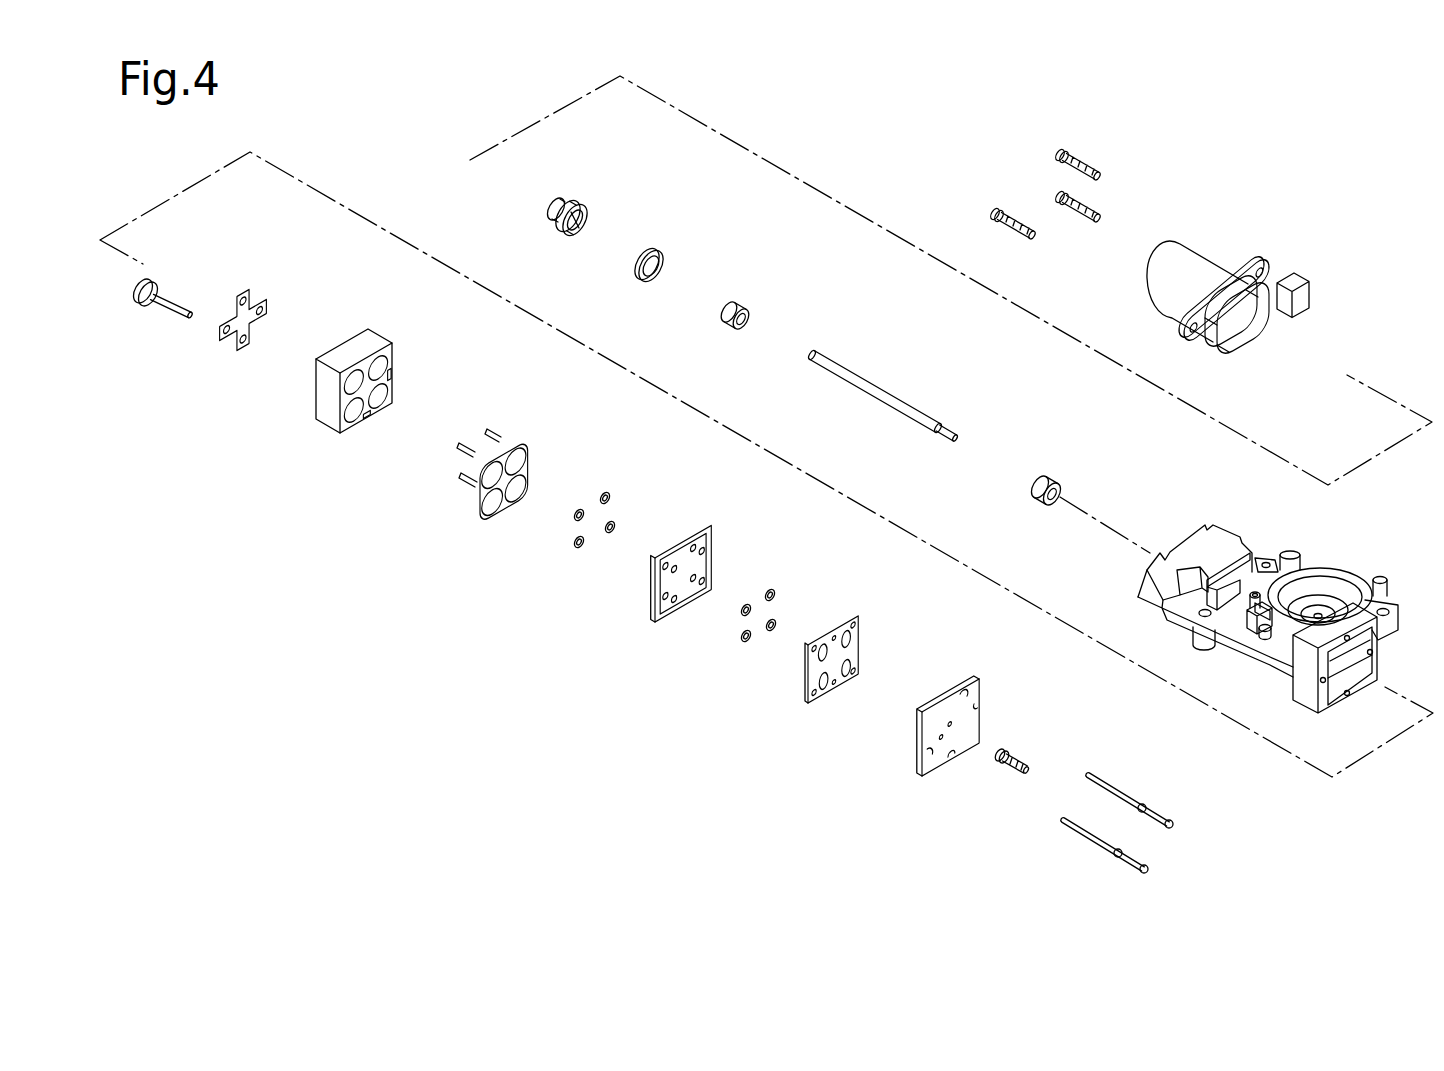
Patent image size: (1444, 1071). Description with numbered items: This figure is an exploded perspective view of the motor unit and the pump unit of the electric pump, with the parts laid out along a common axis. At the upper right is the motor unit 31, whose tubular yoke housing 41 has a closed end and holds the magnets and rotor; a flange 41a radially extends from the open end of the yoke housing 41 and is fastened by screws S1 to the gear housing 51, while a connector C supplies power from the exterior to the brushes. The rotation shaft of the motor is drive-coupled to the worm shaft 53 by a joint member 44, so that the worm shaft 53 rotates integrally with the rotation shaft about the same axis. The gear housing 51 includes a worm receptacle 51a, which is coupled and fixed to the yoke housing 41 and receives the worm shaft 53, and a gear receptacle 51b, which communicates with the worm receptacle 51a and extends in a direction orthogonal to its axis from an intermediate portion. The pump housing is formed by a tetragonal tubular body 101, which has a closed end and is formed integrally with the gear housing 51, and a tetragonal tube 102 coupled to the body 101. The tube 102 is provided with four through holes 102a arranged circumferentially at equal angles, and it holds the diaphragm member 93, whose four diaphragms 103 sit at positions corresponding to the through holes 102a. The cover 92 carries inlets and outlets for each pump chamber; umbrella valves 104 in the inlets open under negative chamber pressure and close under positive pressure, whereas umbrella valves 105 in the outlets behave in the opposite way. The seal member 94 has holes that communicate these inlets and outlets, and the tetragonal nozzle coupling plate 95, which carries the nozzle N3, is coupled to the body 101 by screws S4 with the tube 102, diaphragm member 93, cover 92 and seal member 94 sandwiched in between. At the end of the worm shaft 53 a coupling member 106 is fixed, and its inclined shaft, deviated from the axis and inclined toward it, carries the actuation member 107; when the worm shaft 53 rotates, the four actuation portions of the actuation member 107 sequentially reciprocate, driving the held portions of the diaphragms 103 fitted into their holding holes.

The motor unit 31 is at (1150, 280).
The yoke housing 41 is at (1230, 252).
The flange 41a is at (1255, 265).
The joint member 44 is at (558, 198).
The gear housing 51 is at (1238, 581).
The worm receptacle 51a is at (1232, 570).
The gear receptacle 51b is at (1333, 570).
The worm shaft 53 is at (852, 361).
The cover 92 is at (715, 540).
The diaphragm member 93 is at (501, 446).
The seal member 94 is at (862, 633).
The nozzle coupling plate 95 is at (985, 705).
The body 101 is at (1280, 683).
The tube 102 is at (354, 362).
The through holes 102a is at (395, 362).
The diaphragms 103 is at (512, 425).
The umbrella valves 104 is at (612, 500).
The umbrella valves 105 is at (775, 598).
The coupling member 106 is at (158, 290).
The actuation member 107 is at (263, 300).
The connector C is at (1310, 272).
The nozzle N3 is at (1003, 770).
The screws S1 is at (1088, 158).
The screws S4 is at (1163, 818).